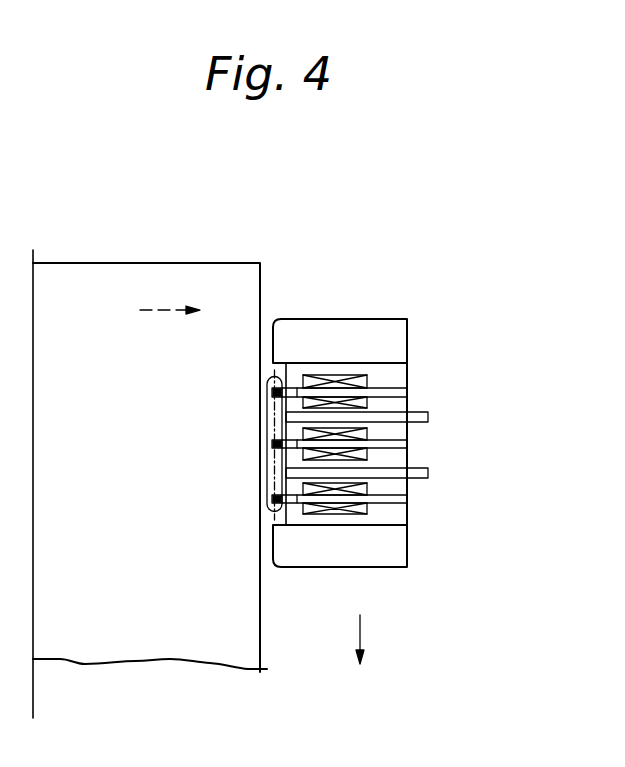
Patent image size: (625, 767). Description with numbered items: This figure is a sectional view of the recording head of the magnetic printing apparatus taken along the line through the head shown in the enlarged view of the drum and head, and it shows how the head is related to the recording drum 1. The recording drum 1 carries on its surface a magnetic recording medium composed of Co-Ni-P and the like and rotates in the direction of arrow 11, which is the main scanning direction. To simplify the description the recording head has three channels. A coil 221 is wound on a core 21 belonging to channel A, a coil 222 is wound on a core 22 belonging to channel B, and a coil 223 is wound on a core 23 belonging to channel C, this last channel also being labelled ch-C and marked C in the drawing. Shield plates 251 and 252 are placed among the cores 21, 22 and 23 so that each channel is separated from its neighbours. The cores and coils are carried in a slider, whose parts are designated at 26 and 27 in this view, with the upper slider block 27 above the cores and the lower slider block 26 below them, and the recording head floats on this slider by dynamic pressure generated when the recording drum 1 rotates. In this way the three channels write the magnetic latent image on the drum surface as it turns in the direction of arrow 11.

The recording drum 1 is at (224, 263).
The arrow 11 is at (168, 308).
The core 21 is at (262, 389).
The core 22 is at (262, 445).
The core 23 is at (262, 499).
The coil 221 is at (365, 382).
The coil 222 is at (368, 434).
The coil 223 is at (368, 487).
The shield plate 251 is at (430, 417).
The shield plate 252 is at (430, 473).
The slider 26 is at (334, 566).
The slider 27 is at (340, 322).
The channel C is at (258, 426).